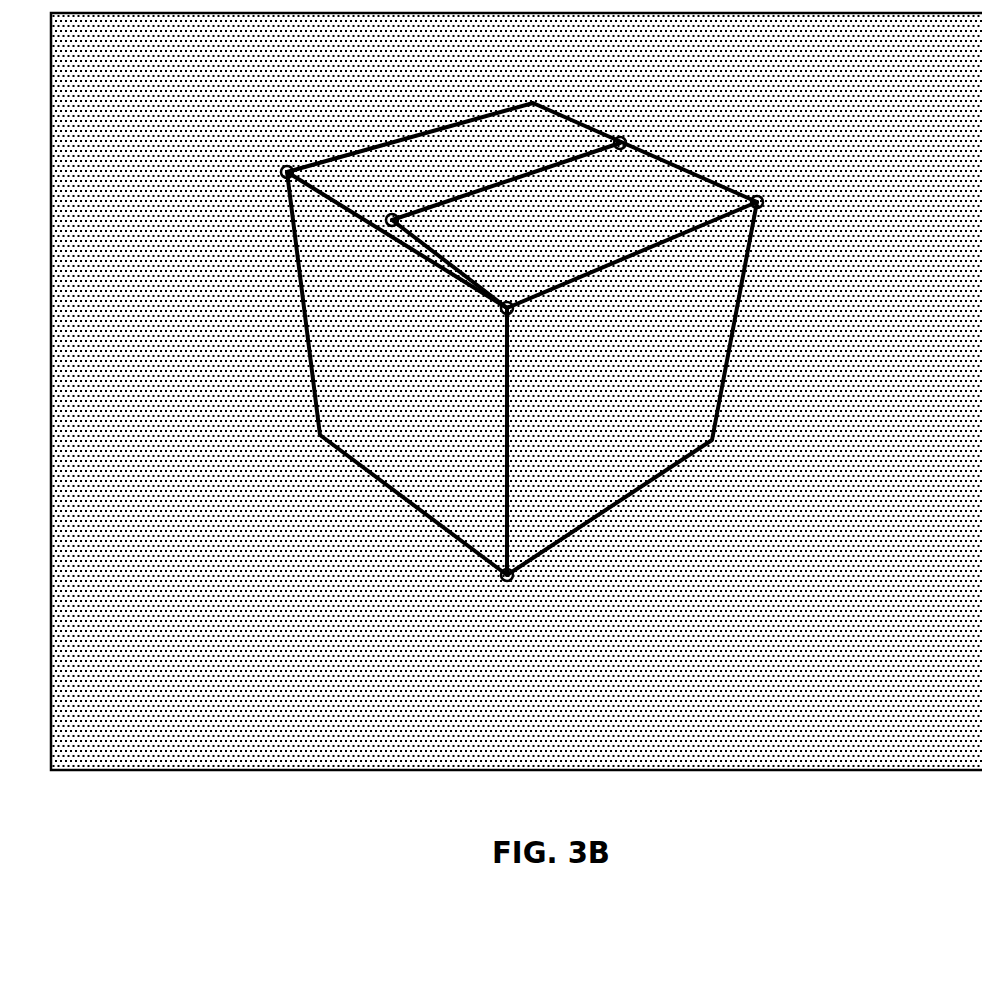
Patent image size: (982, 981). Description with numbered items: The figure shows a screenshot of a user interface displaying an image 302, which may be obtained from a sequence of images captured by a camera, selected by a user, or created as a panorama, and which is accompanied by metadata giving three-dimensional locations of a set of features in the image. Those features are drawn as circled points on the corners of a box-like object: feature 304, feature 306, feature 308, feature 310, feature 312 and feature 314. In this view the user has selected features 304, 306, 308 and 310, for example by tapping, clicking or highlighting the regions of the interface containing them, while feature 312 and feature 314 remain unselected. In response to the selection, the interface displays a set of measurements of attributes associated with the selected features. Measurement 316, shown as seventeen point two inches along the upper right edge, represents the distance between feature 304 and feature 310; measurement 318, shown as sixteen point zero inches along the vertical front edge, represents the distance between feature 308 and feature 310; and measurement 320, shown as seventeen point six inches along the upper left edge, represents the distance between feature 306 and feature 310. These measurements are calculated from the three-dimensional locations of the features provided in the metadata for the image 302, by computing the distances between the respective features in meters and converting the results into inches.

The image 302 is at (831, 771).
The feature 304 is at (754, 197).
The feature 306 is at (286, 166).
The feature 308 is at (508, 581).
The feature 310 is at (506, 303).
The feature 312 is at (389, 214).
The feature 314 is at (617, 138).
The measurement 316 is at (650, 283).
The measurement 318 is at (552, 460).
The measurement 320 is at (378, 265).